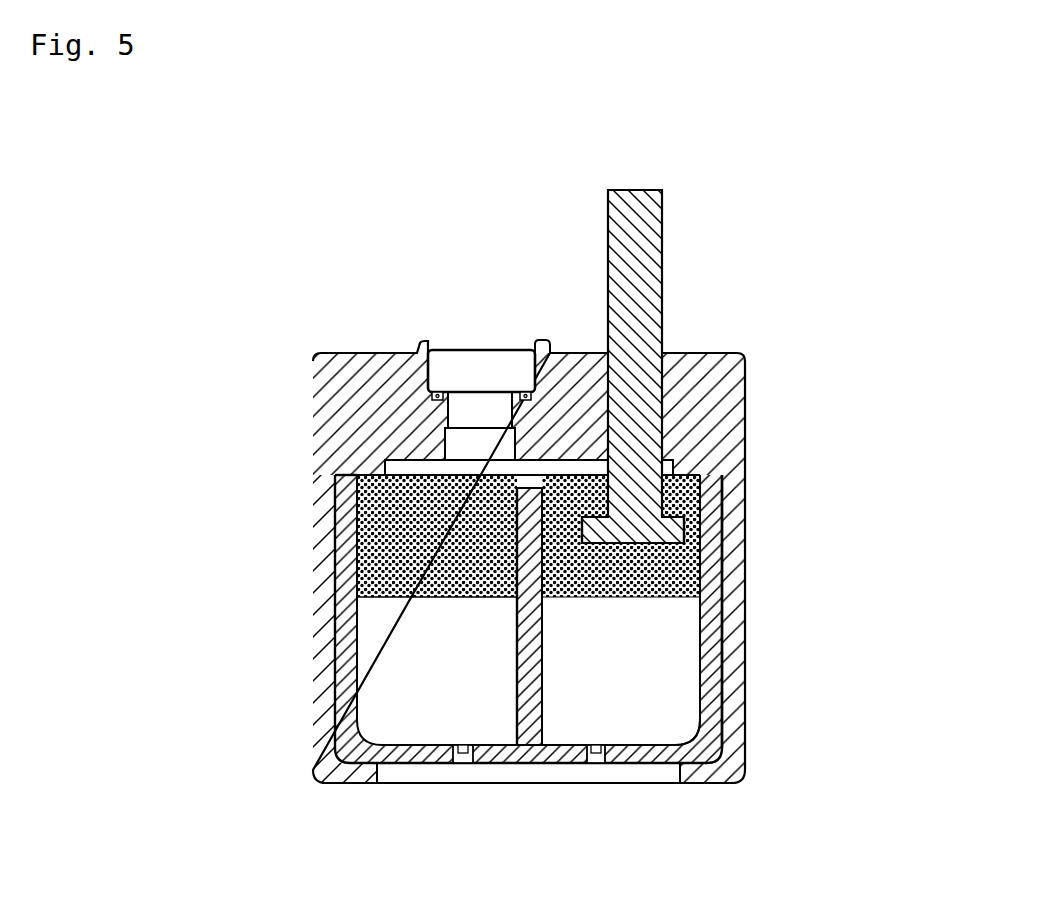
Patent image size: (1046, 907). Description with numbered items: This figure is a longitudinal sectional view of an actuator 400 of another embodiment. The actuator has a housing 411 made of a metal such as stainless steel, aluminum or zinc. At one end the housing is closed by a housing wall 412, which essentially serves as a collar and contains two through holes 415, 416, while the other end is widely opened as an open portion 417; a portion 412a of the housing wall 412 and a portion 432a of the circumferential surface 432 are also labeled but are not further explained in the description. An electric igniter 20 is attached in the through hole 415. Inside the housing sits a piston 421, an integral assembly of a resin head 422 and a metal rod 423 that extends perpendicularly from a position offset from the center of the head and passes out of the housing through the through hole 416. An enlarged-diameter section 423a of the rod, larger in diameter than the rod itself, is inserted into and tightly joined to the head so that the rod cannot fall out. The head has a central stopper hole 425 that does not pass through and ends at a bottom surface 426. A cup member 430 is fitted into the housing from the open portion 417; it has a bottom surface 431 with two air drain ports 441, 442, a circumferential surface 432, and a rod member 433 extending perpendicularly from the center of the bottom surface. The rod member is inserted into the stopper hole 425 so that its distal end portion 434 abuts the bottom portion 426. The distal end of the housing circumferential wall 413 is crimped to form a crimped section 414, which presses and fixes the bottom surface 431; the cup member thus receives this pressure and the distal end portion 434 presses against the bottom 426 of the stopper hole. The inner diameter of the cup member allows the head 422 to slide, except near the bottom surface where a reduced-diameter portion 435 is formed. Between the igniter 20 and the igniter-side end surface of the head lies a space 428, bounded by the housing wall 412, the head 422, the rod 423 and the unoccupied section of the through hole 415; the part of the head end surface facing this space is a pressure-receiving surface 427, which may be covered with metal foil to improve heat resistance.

The electric igniter 20 is at (468, 358).
The actuator 400 is at (764, 342).
The housing 411 is at (538, 575).
The housing wall 412 is at (325, 432).
The inner surface of lid 412a is at (388, 472).
The housing circumferential wall 413 is at (318, 632).
The crimped section 414 is at (693, 770).
The through hole 415 is at (531, 347).
The through hole 416 is at (663, 353).
The open portion 417 is at (398, 777).
The piston 421 is at (436, 601).
The resin head 422 is at (660, 586).
The metal rod 423 is at (656, 228).
The enlarged-diameter section 423a is at (672, 520).
The stopper hole 425 is at (548, 588).
The bottom surface of stopper hole 426 is at (543, 500).
The pressure-receiving surface 427 is at (412, 478).
The space 428 is at (508, 471).
The cup member 430 is at (440, 768).
The bottom surface 431 is at (576, 754).
The circumferential surface 432 is at (710, 677).
The side wall upper end 432a is at (345, 474).
The rod member 433 is at (550, 690).
The distal end portion 434 is at (518, 490).
The reduced-diameter portion 435 is at (690, 726).
The air drain port 441 is at (463, 767).
The air drain port 442 is at (595, 766).